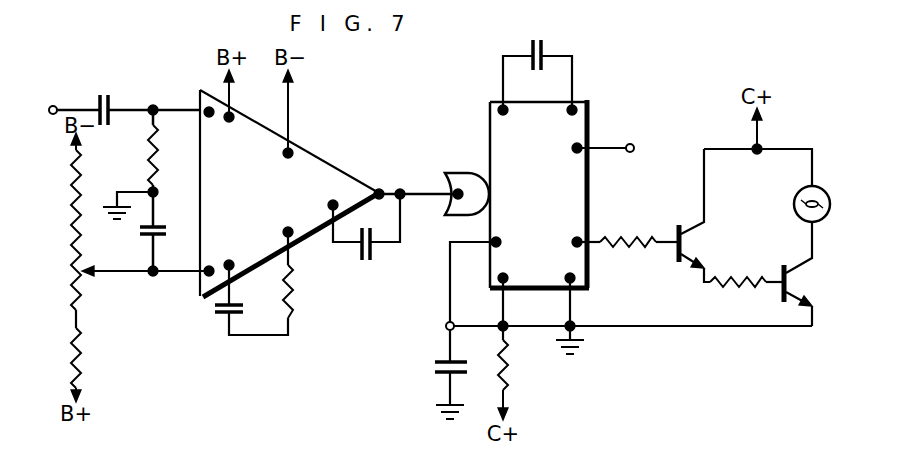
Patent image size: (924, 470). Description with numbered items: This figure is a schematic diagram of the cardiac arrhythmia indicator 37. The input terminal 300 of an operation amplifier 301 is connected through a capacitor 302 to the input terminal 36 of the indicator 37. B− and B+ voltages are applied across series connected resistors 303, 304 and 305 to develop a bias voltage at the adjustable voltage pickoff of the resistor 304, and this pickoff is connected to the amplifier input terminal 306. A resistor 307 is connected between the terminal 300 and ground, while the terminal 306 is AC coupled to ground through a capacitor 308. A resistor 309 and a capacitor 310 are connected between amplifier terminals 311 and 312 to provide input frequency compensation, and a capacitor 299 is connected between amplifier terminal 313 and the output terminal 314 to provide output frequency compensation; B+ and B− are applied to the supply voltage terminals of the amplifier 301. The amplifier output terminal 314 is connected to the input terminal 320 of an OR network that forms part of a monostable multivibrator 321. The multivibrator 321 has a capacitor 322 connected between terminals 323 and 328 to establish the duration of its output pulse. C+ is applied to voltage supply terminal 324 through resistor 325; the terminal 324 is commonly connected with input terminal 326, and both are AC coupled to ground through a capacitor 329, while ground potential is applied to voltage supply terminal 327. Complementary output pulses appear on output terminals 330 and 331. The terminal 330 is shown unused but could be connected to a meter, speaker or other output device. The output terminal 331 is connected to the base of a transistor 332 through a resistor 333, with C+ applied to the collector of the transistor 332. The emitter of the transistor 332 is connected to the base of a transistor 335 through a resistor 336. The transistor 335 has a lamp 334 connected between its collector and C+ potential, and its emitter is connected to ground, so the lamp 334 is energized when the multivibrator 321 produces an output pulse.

The input terminal 36 is at (53, 104).
The cardiac arrhythmia indicator 37 is at (396, 105).
The capacitor 299 is at (366, 262).
The input terminal 300 is at (202, 98).
The operation amplifier 301 is at (305, 172).
The capacitor 302 is at (103, 95).
The resistor 303 is at (72, 192).
The resistor 304 is at (72, 271).
The resistor 305 is at (72, 354).
The amplifier input terminal 306 is at (207, 277).
The resistor 307 is at (148, 150).
The capacitor 308 is at (140, 231).
The resistor 309 is at (295, 290).
The capacitor 310 is at (212, 308).
The amplifier terminal 311 is at (292, 238).
The amplifier terminal 312 is at (232, 270).
The amplifier terminal 313 is at (345, 208).
The output terminal 314 is at (381, 188).
The input terminal 320 is at (459, 187).
The monostable multivibrator 321 is at (503, 136).
The capacitor 322 is at (537, 40).
The terminal 323 is at (501, 104).
The voltage supply terminal 324 is at (497, 278).
The resistor 325 is at (510, 368).
The input terminal 326 is at (497, 238).
The voltage supply terminal 327 is at (590, 284).
The terminal 328 is at (574, 103).
The capacitor 329 is at (432, 367).
The output terminal 330 is at (631, 144).
The output terminal 331 is at (580, 237).
The transistor 332 is at (674, 232).
The resistor 333 is at (665, 246).
The lamp 334 is at (822, 190).
The transistor 335 is at (782, 268).
The resistor 336 is at (750, 287).